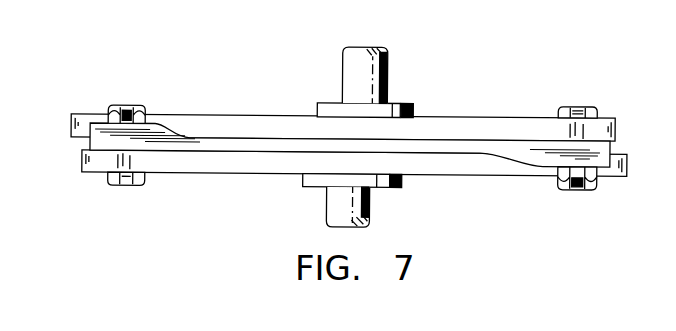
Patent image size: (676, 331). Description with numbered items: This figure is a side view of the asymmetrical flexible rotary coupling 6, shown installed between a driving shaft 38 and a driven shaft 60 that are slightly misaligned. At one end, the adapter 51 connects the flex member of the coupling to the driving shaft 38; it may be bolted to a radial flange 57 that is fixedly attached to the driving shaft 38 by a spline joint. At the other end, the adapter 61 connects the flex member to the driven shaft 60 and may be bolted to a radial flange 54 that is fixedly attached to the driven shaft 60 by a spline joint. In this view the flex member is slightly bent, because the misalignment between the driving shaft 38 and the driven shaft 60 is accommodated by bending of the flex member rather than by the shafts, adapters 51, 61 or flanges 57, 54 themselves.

The flexible rotary coupling 6 is at (493, 109).
The driving shaft 38 is at (342, 70).
The adapter 51 is at (405, 73).
The radial flange 57 is at (413, 104).
The radial flange 54 is at (303, 188).
The adapter 61 is at (413, 195).
The driven shaft 60 is at (368, 207).